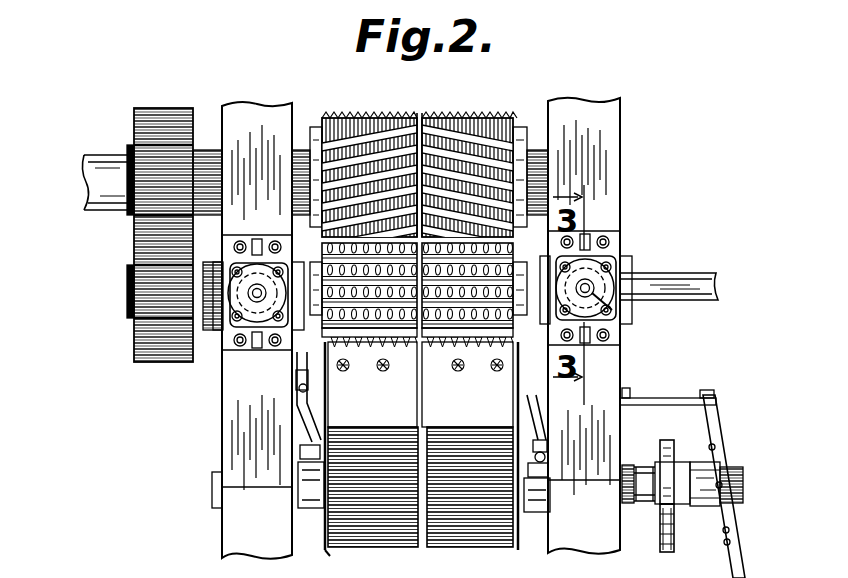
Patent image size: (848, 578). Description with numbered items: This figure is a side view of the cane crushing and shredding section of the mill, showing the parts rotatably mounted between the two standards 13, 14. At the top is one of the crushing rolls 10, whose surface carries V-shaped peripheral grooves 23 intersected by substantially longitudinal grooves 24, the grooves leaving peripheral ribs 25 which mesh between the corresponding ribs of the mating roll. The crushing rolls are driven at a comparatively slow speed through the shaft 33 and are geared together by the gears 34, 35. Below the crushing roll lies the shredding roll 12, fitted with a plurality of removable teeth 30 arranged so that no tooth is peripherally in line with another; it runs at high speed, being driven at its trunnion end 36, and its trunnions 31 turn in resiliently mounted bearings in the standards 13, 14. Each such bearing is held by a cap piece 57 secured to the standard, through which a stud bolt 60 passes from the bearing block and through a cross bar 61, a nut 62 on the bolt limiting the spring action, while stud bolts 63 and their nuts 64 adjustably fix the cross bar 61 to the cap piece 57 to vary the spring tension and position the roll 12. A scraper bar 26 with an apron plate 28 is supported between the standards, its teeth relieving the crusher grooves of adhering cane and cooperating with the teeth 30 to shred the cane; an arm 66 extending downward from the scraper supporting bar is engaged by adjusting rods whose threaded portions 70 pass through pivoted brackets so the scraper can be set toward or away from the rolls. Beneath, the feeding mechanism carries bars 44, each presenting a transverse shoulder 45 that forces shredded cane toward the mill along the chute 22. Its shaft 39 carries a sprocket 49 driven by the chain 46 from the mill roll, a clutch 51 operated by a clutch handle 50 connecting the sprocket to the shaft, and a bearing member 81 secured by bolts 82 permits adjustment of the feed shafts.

The crushing roll 10 is at (342, 122).
The shredding roll 12 is at (478, 330).
The standard 13 is at (232, 381).
The standard 14 is at (606, 367).
The chute 22 is at (330, 548).
The peripheral groove 23 is at (470, 122).
The longitudinally extending groove 24 is at (370, 134).
The peripheral rib 25 is at (506, 118).
The scraper bar 26 is at (394, 410).
The apron plate 28 is at (500, 412).
The tooth 30 is at (406, 340).
The trunnion 31 is at (596, 244).
The shaft 33 is at (98, 170).
The gear 34 is at (168, 128).
The gear 35 is at (155, 340).
The trunnion end 36 is at (682, 284).
The shaft 39 is at (646, 470).
The carrier and feeding bar 44 is at (400, 516).
The transversely extending shoulder 45 is at (473, 520).
The chain 46 is at (675, 546).
The sprocket 49 is at (673, 456).
The clutch handle 50 is at (740, 570).
The clutch 51 is at (702, 482).
The cap piece 57 is at (612, 252).
The stud bolt 60 is at (592, 293).
The cross bar 61 is at (612, 270).
The nut 62 is at (628, 322).
The stud bolt 63 is at (234, 320).
The nut 64 is at (240, 340).
The arm 66 is at (312, 428).
The threaded portion 70 is at (548, 466).
The bearing member 81 is at (550, 502).
The bolt 82 is at (540, 482).